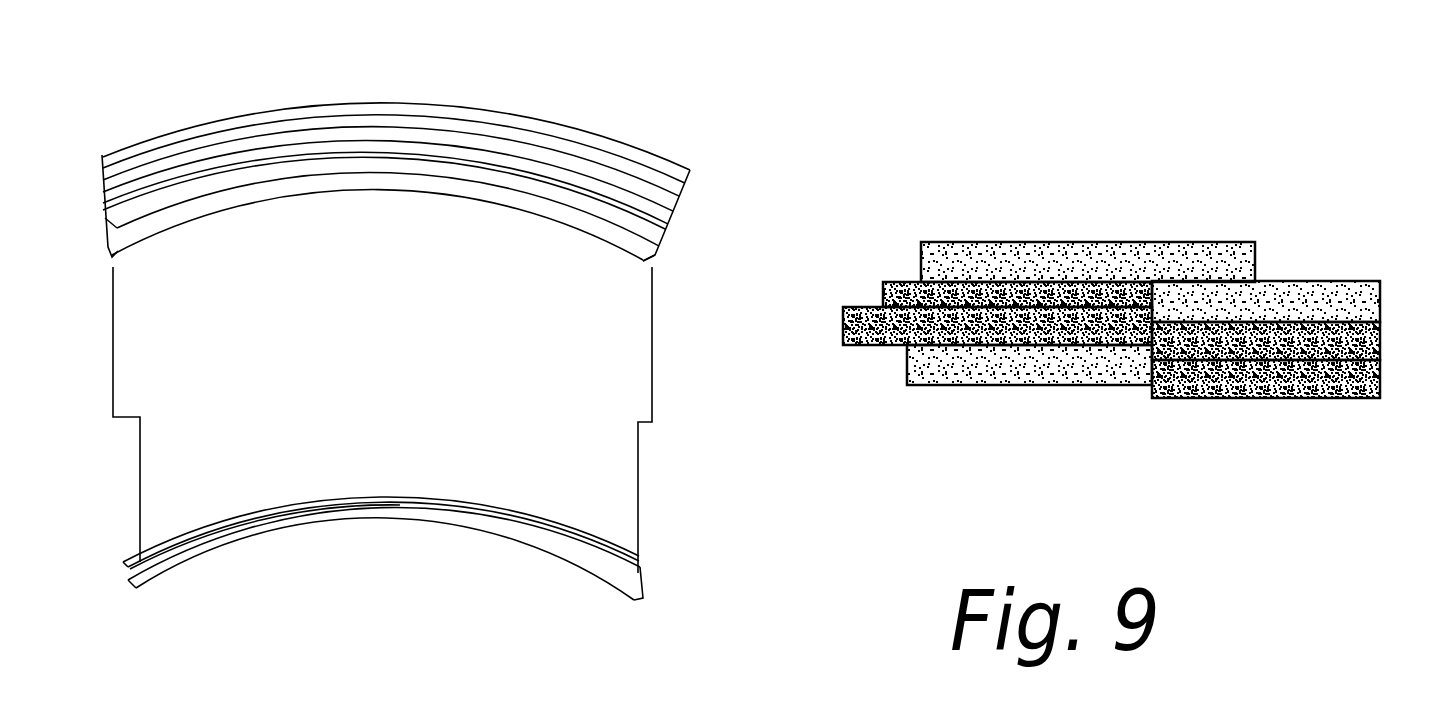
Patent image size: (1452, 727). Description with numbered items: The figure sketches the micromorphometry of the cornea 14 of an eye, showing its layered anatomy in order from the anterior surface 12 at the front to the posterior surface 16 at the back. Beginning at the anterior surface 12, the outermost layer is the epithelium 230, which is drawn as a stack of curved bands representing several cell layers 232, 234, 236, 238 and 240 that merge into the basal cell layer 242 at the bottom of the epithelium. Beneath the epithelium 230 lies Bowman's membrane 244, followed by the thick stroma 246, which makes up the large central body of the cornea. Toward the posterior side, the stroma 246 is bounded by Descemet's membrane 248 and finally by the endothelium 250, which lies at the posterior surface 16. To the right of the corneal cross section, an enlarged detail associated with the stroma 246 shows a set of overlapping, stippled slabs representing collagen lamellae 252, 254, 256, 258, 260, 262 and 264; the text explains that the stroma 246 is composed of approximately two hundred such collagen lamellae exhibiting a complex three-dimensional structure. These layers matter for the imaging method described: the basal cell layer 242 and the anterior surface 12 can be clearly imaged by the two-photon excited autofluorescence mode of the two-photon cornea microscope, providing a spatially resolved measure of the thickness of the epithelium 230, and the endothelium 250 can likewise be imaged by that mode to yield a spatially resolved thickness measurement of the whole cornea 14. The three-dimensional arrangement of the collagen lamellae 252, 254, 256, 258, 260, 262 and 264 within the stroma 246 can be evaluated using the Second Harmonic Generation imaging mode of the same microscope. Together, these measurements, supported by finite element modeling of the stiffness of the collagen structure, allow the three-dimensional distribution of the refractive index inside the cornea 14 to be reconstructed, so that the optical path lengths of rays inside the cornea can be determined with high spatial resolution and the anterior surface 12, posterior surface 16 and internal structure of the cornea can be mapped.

The anterior surface 12 is at (207, 126).
The cornea 14 is at (1119, 267).
The posterior surface 16 is at (205, 541).
The epithelium 230 is at (337, 86).
The cell layer 232 is at (690, 181).
The cell layer 234 is at (685, 203).
The cell layer 236 is at (677, 218).
The cell layer 238 is at (673, 224).
The cell layer 240 is at (670, 231).
The basal cell layer 242 is at (670, 238).
The Bowman's membrane 244 is at (660, 254).
The stroma 246 is at (877, 396).
The Descemet's membrane 248 is at (641, 562).
The endothelium 250 is at (645, 598).
The collagen lamella 252 is at (1035, 250).
The collagen lamella 254 is at (905, 286).
The collagen lamella 256 is at (843, 346).
The collagen lamella 258 is at (950, 350).
The collagen lamella 260 is at (1255, 396).
The collagen lamella 262 is at (1381, 342).
The collagen lamella 264 is at (1300, 292).